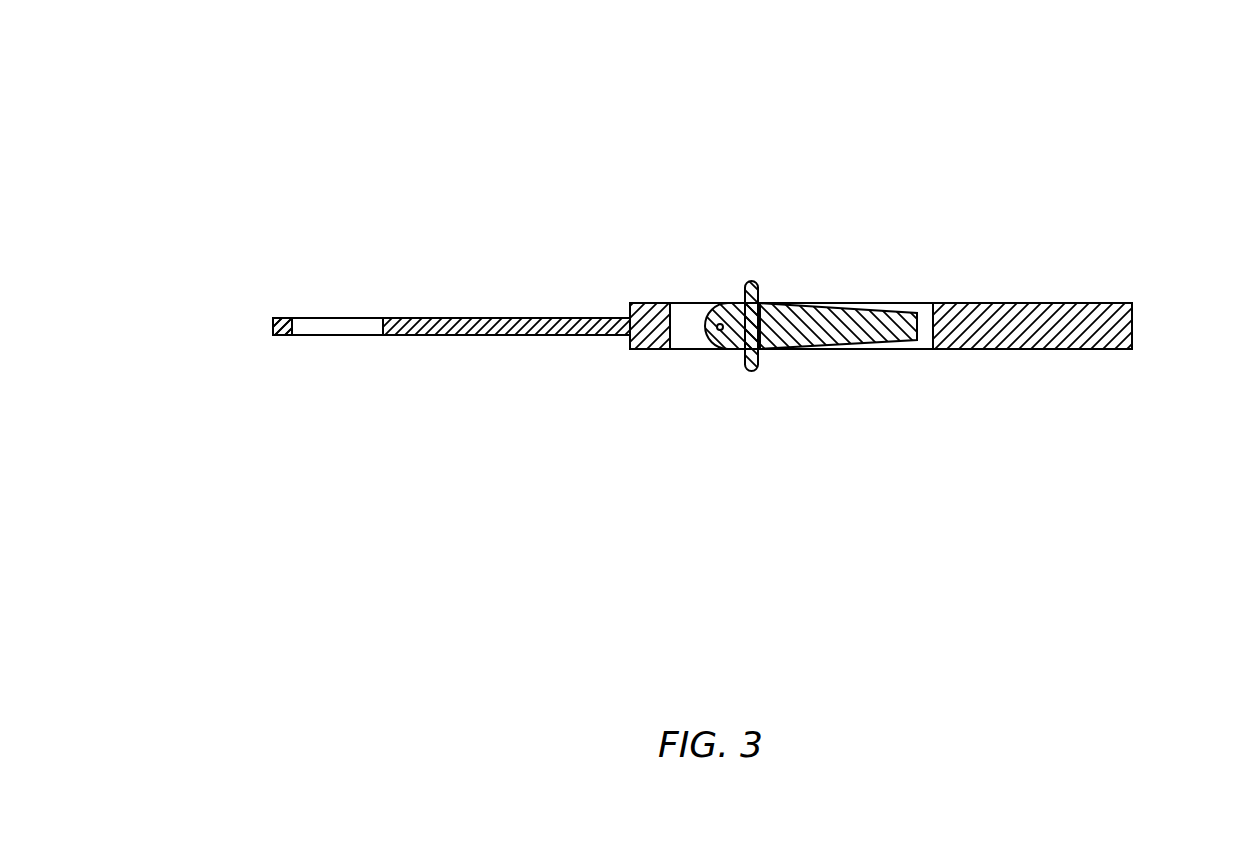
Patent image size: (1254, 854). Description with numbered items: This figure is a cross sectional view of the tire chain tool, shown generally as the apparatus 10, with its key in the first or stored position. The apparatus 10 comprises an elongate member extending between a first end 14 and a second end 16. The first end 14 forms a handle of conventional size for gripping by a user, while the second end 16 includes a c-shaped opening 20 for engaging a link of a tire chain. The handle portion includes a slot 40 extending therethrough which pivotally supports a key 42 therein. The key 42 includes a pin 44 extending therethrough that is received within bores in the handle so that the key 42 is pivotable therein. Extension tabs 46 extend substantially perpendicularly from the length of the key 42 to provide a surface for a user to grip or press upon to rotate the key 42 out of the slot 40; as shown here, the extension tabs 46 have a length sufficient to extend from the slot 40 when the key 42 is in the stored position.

The apparatus 10 is at (667, 98).
The first end 14 is at (1132, 323).
The second end 16 is at (270, 320).
The c-shaped opening 20 is at (340, 336).
The slot 40 is at (922, 303).
The key 42 is at (888, 336).
The pin 44 is at (710, 333).
The extension tabs 46 is at (757, 290).